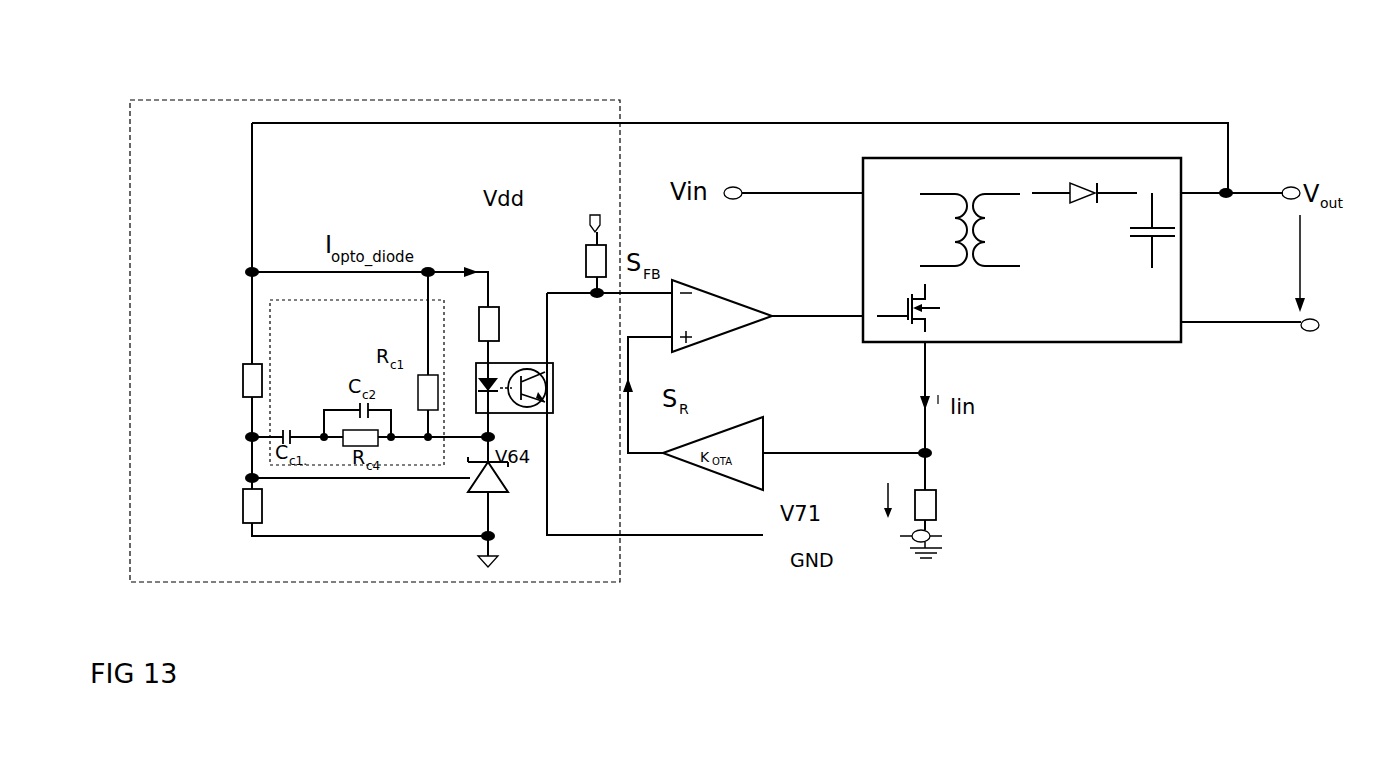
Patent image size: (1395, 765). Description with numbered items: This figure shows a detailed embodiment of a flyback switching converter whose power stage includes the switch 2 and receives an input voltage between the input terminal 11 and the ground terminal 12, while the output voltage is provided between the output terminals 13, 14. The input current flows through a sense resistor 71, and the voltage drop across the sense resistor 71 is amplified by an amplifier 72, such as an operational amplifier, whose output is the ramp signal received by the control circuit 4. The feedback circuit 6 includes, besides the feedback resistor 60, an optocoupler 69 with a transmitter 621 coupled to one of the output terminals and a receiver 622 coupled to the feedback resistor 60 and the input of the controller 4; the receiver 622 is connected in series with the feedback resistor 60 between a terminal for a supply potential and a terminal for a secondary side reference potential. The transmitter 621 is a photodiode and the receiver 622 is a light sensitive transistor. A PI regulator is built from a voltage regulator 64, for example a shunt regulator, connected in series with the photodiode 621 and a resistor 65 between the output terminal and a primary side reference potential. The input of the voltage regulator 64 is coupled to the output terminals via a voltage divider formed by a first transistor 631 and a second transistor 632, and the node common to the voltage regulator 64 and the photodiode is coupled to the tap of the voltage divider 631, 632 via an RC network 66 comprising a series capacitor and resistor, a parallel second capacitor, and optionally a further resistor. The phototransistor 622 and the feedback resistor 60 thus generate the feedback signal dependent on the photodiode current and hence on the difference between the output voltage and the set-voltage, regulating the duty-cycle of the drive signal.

The feedback circuit 6 is at (522, 100).
The RC network 66 is at (267, 311).
The first transistor 631 is at (241, 383).
The second transistor 632 is at (239, 510).
The resistor 65 is at (540, 296).
The feedback resistor 60 is at (585, 257).
The optocoupler 69 is at (553, 365).
The transmitter 621 is at (476, 376).
The receiver 622 is at (548, 389).
The voltage regulator 64 is at (468, 487).
The control circuit 4 is at (710, 296).
The amplifier 72 is at (768, 430).
The switch 2 is at (957, 313).
The input terminal 11 is at (738, 188).
The output terminal 13 is at (1296, 190).
The output terminal 14 is at (1308, 331).
The sense resistor 71 is at (945, 501).
The ground terminal 12 is at (938, 537).